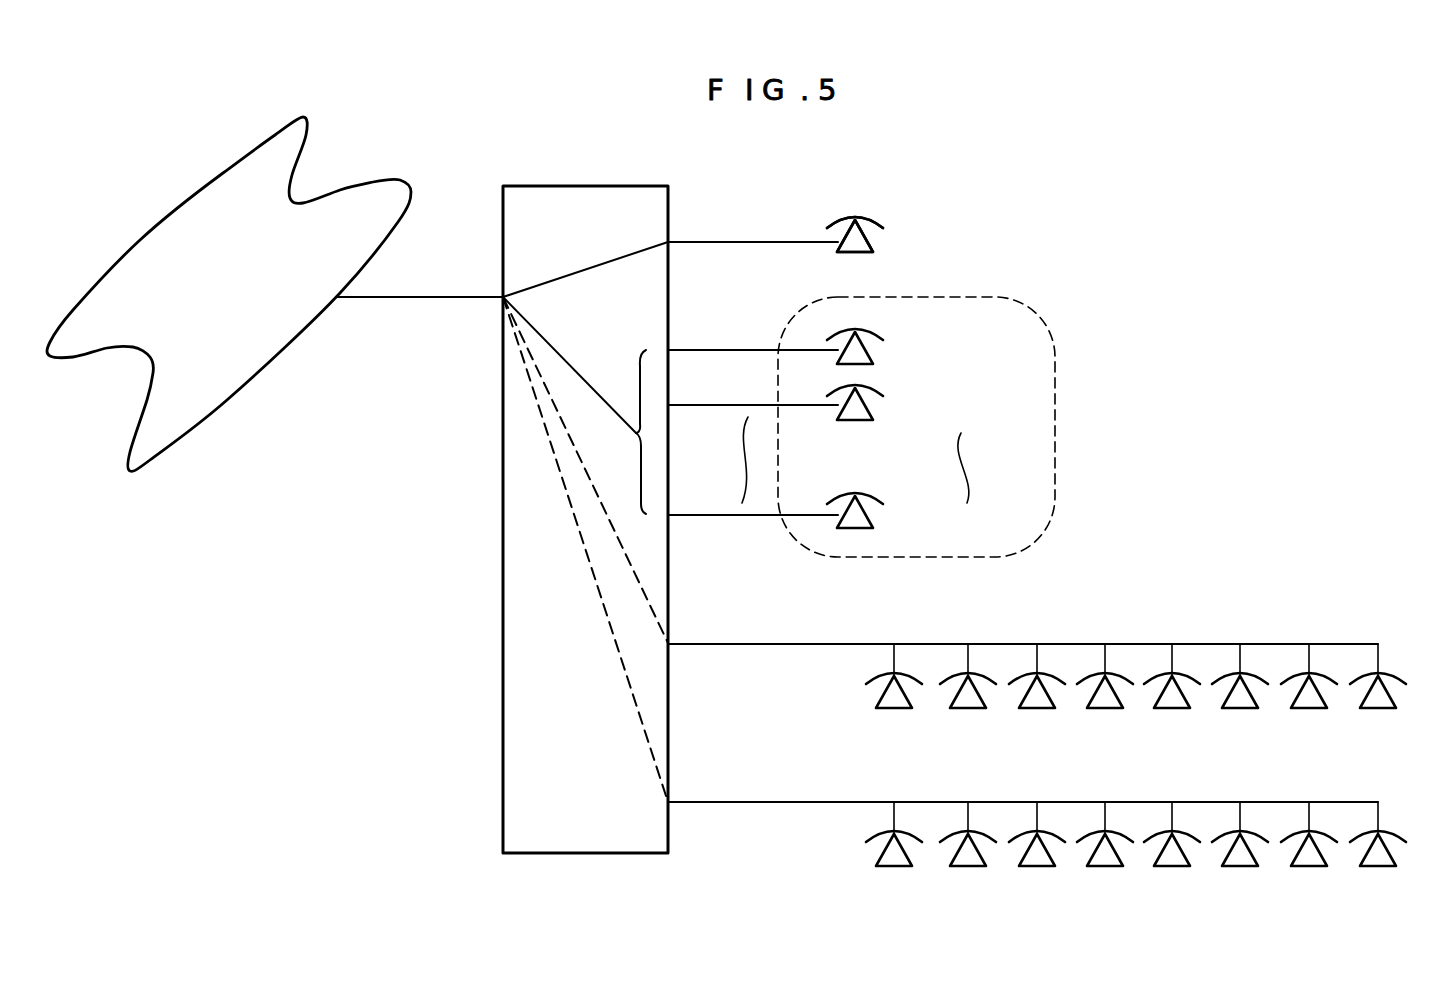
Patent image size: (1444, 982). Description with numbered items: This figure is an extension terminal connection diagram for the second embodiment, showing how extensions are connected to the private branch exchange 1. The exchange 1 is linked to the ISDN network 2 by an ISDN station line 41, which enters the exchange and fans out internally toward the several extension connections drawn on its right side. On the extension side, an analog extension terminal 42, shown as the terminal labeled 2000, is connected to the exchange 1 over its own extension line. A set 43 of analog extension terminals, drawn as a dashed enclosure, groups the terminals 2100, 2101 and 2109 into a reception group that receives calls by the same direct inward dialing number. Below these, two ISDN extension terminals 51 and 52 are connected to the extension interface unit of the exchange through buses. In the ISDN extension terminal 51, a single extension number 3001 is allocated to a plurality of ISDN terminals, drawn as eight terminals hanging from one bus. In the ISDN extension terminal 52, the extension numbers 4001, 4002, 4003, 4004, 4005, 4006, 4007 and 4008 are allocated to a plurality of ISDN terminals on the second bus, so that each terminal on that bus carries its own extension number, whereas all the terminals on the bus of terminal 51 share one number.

The private branch exchange 1 is at (588, 187).
The ISDN network 2 is at (233, 162).
The ISDN station line 41 is at (421, 300).
The analog extension terminal 42 is at (865, 220).
The set of analog extension terminals 43 is at (885, 398).
The ISDN extension terminal 51 is at (1037, 660).
The ISDN extension terminal 52 is at (1047, 845).
The terminal 2000 is at (919, 236).
The terminal 2100 is at (841, 355).
The terminal 2101 is at (840, 408).
The terminal 2109 is at (841, 516).
The extension number 3001 is at (1352, 603).
The extension number 4001 is at (890, 853).
The extension number 4002 is at (968, 870).
The extension number 4003 is at (1034, 853).
The extension number 4004 is at (1105, 870).
The extension number 4005 is at (1169, 853).
The extension number 4006 is at (1240, 870).
The extension number 4007 is at (1308, 853).
The extension number 4008 is at (1378, 870).